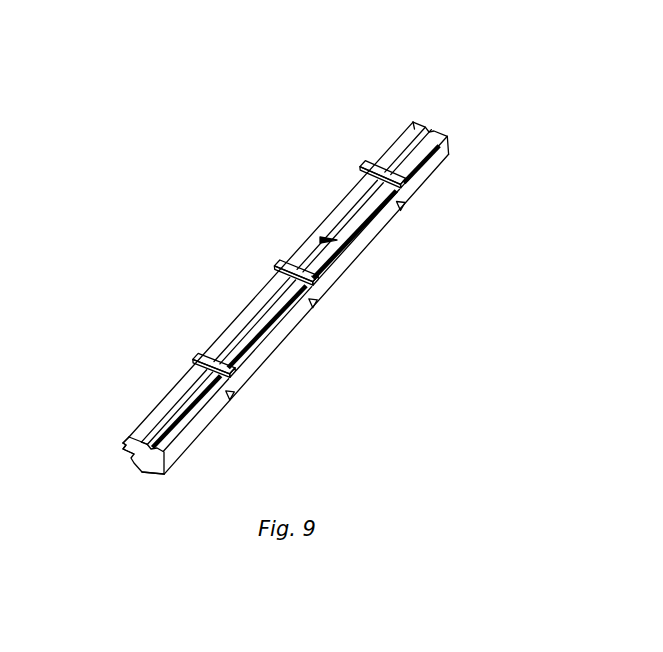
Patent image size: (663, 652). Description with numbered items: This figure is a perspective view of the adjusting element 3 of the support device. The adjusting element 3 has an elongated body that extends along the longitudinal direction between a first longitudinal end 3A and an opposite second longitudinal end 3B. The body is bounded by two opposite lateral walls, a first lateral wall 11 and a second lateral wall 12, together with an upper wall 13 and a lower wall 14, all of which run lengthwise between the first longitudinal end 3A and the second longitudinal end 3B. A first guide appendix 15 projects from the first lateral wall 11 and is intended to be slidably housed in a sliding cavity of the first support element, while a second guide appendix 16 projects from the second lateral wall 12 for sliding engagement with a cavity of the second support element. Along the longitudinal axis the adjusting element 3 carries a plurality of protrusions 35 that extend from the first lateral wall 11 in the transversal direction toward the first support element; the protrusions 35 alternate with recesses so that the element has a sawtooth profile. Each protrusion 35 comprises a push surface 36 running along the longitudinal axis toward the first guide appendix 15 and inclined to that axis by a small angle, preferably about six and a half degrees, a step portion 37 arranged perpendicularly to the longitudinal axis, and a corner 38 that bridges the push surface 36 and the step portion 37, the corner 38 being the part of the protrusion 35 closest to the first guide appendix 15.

The adjusting element 3 is at (250, 126).
The first longitudinal end 3A is at (436, 100).
The second longitudinal end 3B is at (127, 520).
The first lateral wall 11 is at (221, 256).
The second lateral wall 12 is at (306, 357).
The upper wall 13 is at (131, 437).
The lower wall 14 is at (151, 473).
The first guide appendix 15 is at (122, 449).
The second guide appendix 16 is at (193, 428).
The protrusion 35 is at (346, 243).
The push surface 36 is at (318, 268).
The step portion 37 is at (195, 360).
The corner 38 is at (232, 396).